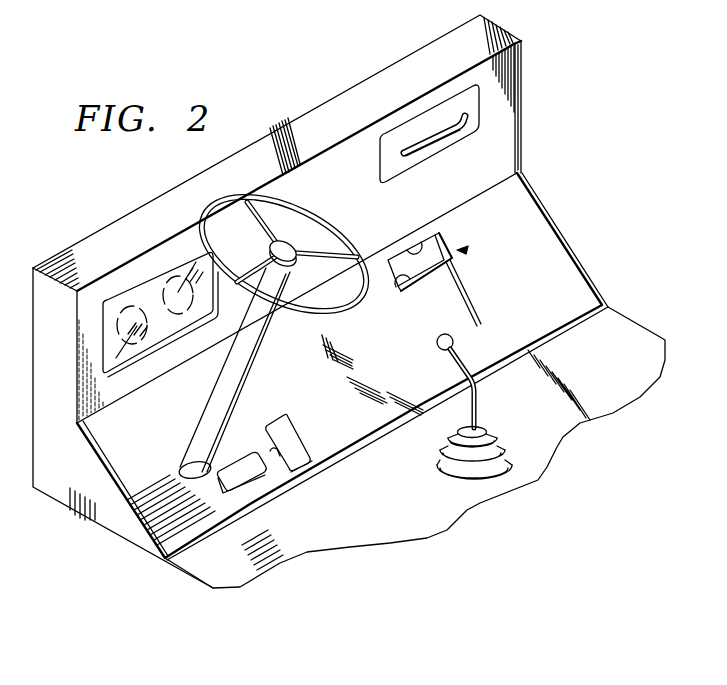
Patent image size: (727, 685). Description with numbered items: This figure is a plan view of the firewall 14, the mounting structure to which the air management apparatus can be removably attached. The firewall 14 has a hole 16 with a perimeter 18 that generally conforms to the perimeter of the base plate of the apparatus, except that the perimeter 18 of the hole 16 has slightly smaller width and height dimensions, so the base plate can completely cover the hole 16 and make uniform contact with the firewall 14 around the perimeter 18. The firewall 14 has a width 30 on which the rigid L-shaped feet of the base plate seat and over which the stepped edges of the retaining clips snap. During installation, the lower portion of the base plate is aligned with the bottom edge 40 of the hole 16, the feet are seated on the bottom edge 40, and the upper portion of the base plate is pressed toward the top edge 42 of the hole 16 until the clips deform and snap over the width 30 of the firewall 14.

The firewall 14 is at (474, 214).
The hole 16 is at (465, 250).
The perimeter 18 is at (446, 238).
The width 30 is at (433, 308).
The bottom edge 40 is at (392, 273).
The top edge 42 is at (405, 245).